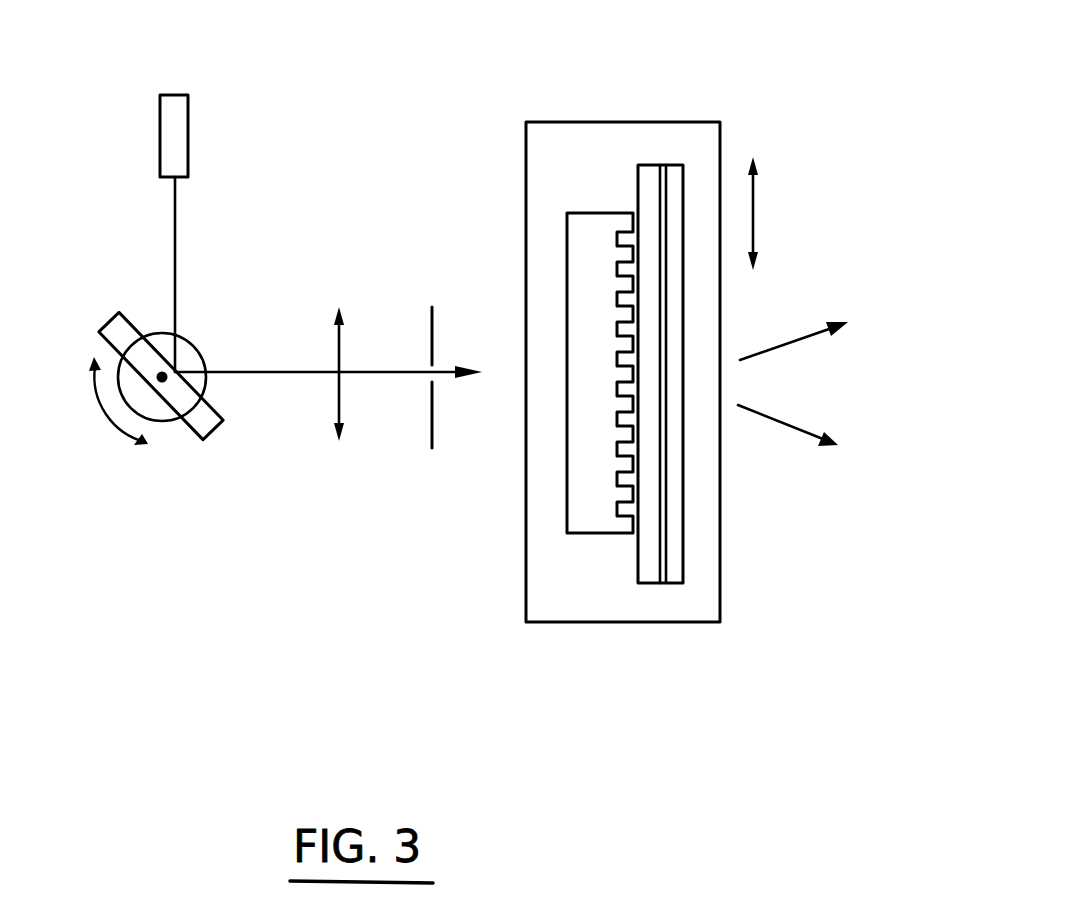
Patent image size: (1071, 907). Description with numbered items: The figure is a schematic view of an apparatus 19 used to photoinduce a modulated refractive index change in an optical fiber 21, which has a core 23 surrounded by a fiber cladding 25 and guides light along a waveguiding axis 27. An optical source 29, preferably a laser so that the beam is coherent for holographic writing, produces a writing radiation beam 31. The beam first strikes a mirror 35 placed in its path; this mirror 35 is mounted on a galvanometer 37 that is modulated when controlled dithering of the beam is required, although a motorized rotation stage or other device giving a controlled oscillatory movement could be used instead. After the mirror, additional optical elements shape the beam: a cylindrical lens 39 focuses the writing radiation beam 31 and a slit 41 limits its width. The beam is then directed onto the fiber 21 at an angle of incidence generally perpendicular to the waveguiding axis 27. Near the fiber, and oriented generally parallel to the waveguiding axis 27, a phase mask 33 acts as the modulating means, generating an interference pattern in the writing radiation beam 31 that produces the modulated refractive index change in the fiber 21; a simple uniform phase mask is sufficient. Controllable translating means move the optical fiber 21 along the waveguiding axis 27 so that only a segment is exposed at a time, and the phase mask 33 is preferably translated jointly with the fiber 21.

The apparatus 19 is at (284, 581).
The optical fiber 21 is at (673, 502).
The core 23 is at (663, 172).
The fiber cladding 25 is at (642, 178).
The waveguiding axis 27 is at (755, 215).
The optical source 29 is at (181, 117).
The writing radiation beam 31 is at (175, 248).
The phase mask 33 is at (577, 463).
The mirror 35 is at (118, 333).
The galvanometer 37 is at (158, 414).
The cylindrical lens 39 is at (337, 394).
The slit 41 is at (433, 322).